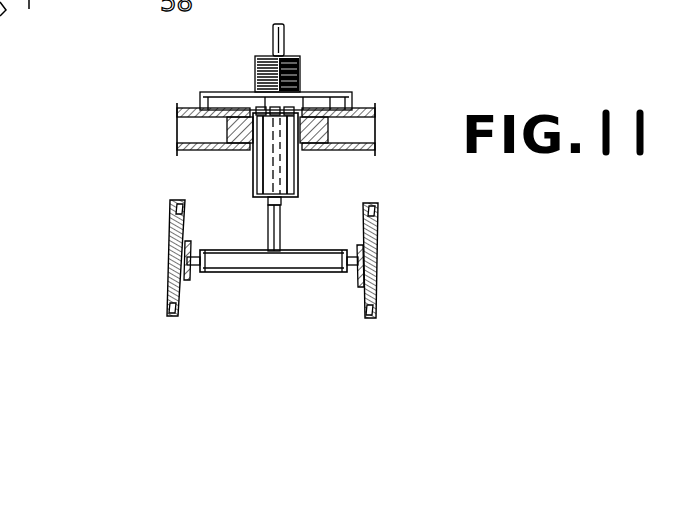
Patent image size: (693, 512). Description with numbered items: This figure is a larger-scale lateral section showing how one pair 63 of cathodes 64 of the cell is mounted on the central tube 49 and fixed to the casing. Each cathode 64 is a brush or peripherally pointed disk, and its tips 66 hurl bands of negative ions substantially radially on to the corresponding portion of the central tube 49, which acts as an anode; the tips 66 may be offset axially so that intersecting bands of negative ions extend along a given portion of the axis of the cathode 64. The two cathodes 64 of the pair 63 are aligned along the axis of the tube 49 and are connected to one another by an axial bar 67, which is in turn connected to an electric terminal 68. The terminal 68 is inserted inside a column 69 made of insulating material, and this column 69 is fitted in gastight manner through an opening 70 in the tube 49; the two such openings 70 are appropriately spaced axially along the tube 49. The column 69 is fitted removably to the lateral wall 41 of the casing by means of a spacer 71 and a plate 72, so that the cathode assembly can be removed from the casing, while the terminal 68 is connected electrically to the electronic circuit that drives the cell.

The lateral wall 41 is at (364, 106).
The central tube 49 is at (240, 150).
The pair of cathodes 63 is at (178, 187).
The cathode 64 is at (170, 293).
The tips 66 is at (175, 207).
The axial bar 67 is at (250, 258).
The electric terminal 68 is at (282, 48).
The column 69 is at (300, 65).
The opening 70 is at (349, 190).
The spacer 71 is at (235, 130).
The plate 72 is at (240, 103).